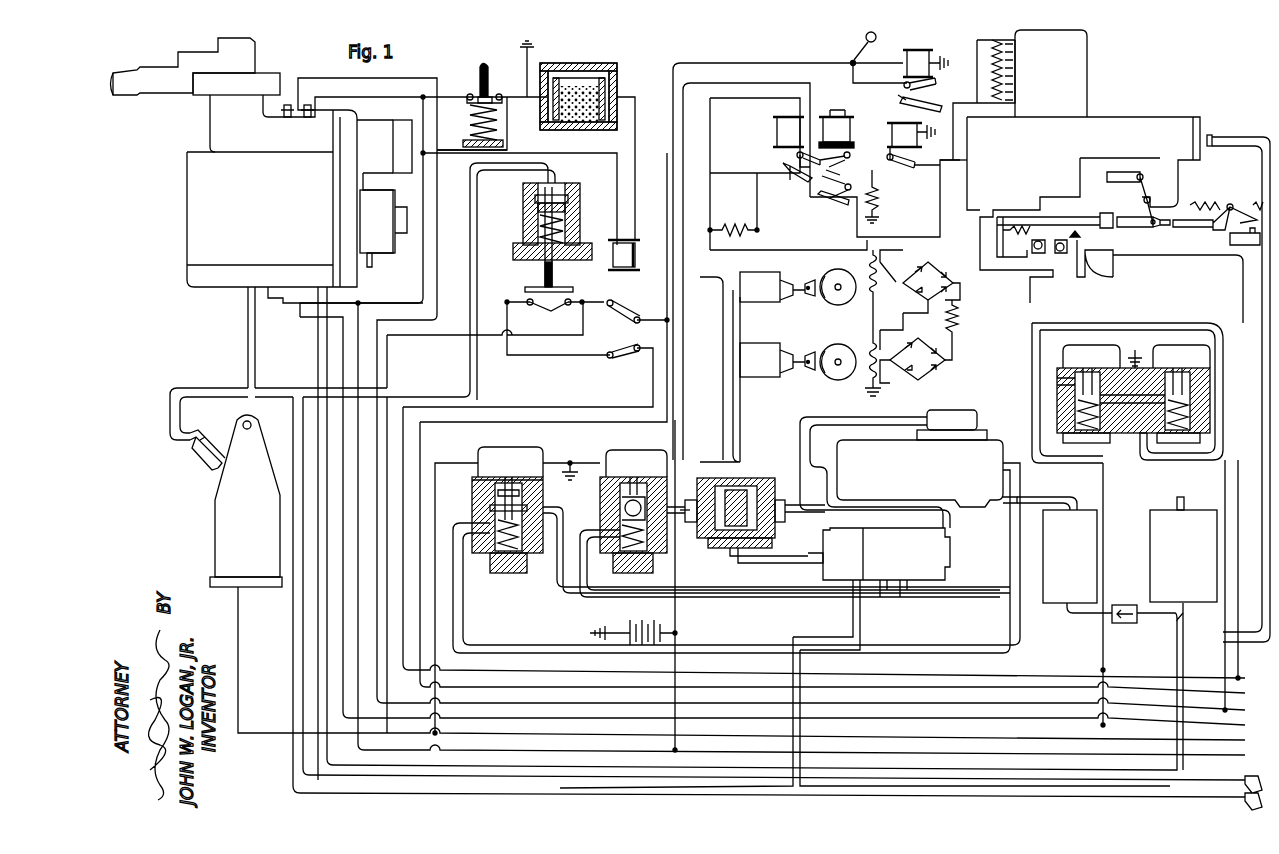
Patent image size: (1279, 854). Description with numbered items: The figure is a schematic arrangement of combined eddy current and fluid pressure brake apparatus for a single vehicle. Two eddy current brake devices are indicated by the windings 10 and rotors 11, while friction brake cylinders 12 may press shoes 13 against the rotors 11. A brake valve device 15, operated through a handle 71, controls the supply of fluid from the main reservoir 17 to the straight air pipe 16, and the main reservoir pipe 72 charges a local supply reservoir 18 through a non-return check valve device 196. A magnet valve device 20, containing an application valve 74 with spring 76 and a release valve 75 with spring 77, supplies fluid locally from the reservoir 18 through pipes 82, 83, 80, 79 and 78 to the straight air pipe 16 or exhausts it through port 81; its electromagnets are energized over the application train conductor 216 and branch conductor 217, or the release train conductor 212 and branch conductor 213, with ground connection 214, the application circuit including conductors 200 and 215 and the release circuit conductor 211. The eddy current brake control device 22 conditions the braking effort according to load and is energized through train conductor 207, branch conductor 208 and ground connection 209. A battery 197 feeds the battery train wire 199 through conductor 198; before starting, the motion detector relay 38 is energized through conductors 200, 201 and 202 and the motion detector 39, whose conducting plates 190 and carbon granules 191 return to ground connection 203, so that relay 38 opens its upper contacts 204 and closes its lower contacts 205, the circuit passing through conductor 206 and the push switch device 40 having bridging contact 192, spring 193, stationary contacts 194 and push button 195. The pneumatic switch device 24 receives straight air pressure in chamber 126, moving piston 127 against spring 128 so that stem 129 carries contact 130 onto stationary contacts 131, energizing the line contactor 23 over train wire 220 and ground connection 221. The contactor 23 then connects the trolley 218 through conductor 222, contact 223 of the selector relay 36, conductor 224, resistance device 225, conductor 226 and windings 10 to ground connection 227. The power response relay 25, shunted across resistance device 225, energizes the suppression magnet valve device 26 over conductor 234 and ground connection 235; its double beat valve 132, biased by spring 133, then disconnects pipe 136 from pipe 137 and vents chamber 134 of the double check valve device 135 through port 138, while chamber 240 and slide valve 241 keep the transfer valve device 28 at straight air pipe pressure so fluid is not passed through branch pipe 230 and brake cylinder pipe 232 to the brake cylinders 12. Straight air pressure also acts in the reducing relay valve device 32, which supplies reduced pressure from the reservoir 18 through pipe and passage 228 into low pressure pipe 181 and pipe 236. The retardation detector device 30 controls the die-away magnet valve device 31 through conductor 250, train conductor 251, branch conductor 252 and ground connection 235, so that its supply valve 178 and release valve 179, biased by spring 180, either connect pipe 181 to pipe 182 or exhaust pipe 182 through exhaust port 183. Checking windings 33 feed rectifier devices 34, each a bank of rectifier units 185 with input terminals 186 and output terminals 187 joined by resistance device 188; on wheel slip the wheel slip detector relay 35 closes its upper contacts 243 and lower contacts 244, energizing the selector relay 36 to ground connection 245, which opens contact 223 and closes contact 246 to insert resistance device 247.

The handle 71 is at (122, 78).
The brake valve device 15 is at (180, 214).
The application train conductor 216 is at (312, 77).
The conductor 215 is at (345, 94).
The conductor 211 is at (305, 300).
The release train conductor 212 is at (1075, 725).
The conductor 200 is at (420, 278).
The battery train wire 199 is at (356, 358).
The main reservoir pipe 72 is at (1065, 773).
The straight air pipe 16 is at (248, 330).
The train conductor 251 is at (238, 683).
The conductor 250 is at (387, 386).
The retardation detector device 30 is at (205, 527).
The push switch device 40 is at (456, 84).
The push button 195 is at (484, 62).
The stationary contacts 194 is at (490, 95).
The bridging contact 192 is at (468, 111).
The spring 193 is at (468, 132).
The motion detector device 39 is at (622, 68).
The electrically conducting plates 190 is at (600, 76).
The conducting granules 191 is at (575, 118).
The ground connection 203 is at (534, 45).
The conductor 201 is at (556, 153).
The conductor 202 is at (636, 152).
The motion detector relay 38 is at (637, 257).
The pneumatic switch device 24 is at (583, 183).
The chamber 126 is at (560, 199).
The piston 127 is at (560, 210).
The spring 128 is at (536, 226).
The stem 129 is at (547, 262).
The contact 130 is at (556, 290).
The stationary contacts 131 is at (557, 327).
The upper contacts 204 is at (544, 287).
The conductor 206 is at (545, 356).
The lower contacts 205 is at (628, 364).
The train conductor 207 is at (1075, 678).
The train wire 220 is at (548, 420).
The trolley 218 is at (862, 45).
The line switch 23 is at (906, 59).
The ground connection 221 is at (934, 100).
The conductor 198 is at (683, 165).
The power response relay 25 is at (777, 128).
The wheel slip detector relay 35 is at (832, 110).
The selector relay 36 is at (892, 133).
The ground connection 245 is at (936, 105).
The upper contact 246 is at (895, 156).
The contact 223 is at (915, 167).
The resistance device 247 is at (880, 197).
The conductor 224 is at (888, 237).
The upper contacts 243 is at (817, 174).
The lower contacts 244 is at (834, 202).
The resistance device 225 is at (754, 201).
The conductor 226 is at (790, 256).
The conductor 222 is at (972, 154).
The conductor 234 is at (700, 290).
The brake cylinder pipe 232 is at (728, 413).
The brake cylinders 12 is at (767, 302).
The shoes 13 is at (818, 298).
The rotors 11 is at (836, 302).
The windings 10 is at (870, 300).
The ground connection 227 is at (864, 390).
The checking windings 33 is at (893, 280).
The input terminals 186 is at (928, 262).
The rectifier units 185 is at (940, 272).
The rectifier devices 34 is at (951, 291).
The output terminals 187 is at (910, 300).
The resistance device 188 is at (968, 322).
The die-away magnet valve device 31 is at (522, 440).
The exhaust port 183 is at (470, 478).
The release valve 179 is at (473, 490).
The supply valve 178 is at (473, 517).
The spring 180 is at (505, 556).
The low pressure pipe 181 is at (462, 634).
The branch conductor 252 is at (436, 610).
The second pipe 182 is at (568, 585).
The ground connection 235 is at (572, 461).
The suppression magnet valve device 26 is at (613, 448).
The port 138 is at (605, 485).
The double beat valve 132 is at (605, 510).
The spring 133 is at (612, 553).
The pipe 236 is at (860, 600).
The chamber 134 is at (712, 480).
The double check valve device 135 is at (741, 470).
The chamber 240 is at (768, 478).
The pipe 137 is at (712, 538).
The slide valve 241 is at (760, 535).
The transfer valve device 28 is at (874, 538).
The branch pipe 230 is at (905, 590).
The reducing relay valve device 32 is at (954, 405).
The pipe and passage 228 is at (1006, 502).
The local supply reservoir 18 is at (1068, 510).
The main reservoir 17 is at (1162, 512).
The non-return check valve device 196 is at (1127, 601).
The branch conductor 213 is at (1103, 655).
The pipe 78 is at (792, 637).
The pipe 79 is at (1270, 480).
The branch conductor 217 is at (1224, 478).
The battery 197 is at (648, 618).
The pipe 136 is at (728, 612).
The pipe 82 is at (1030, 326).
The pipe 83 is at (1222, 345).
The pipe 80 is at (1138, 462).
The magnet valve device 20 is at (1115, 338).
The ground connection 214 is at (1137, 348).
The port 81 is at (1060, 380).
The release valve 75 is at (1060, 402).
The application valve 74 is at (1190, 400).
The spring 77 is at (1075, 439).
The spring 76 is at (1201, 439).
The eddy current brake control device 22 is at (1099, 87).
The ground connection 209 is at (1078, 240).
The branch conductor 208 is at (1240, 272).